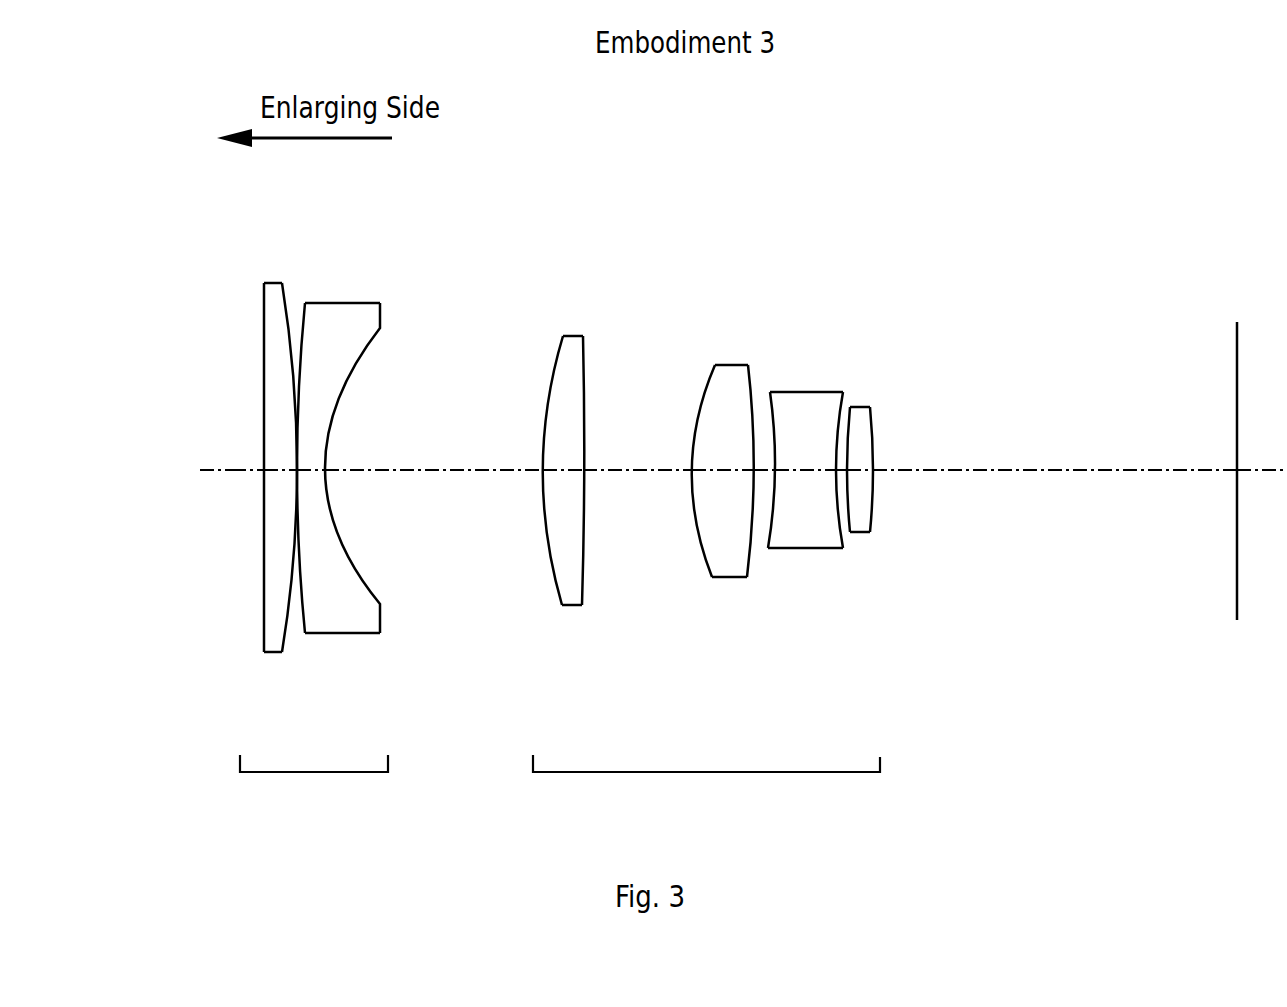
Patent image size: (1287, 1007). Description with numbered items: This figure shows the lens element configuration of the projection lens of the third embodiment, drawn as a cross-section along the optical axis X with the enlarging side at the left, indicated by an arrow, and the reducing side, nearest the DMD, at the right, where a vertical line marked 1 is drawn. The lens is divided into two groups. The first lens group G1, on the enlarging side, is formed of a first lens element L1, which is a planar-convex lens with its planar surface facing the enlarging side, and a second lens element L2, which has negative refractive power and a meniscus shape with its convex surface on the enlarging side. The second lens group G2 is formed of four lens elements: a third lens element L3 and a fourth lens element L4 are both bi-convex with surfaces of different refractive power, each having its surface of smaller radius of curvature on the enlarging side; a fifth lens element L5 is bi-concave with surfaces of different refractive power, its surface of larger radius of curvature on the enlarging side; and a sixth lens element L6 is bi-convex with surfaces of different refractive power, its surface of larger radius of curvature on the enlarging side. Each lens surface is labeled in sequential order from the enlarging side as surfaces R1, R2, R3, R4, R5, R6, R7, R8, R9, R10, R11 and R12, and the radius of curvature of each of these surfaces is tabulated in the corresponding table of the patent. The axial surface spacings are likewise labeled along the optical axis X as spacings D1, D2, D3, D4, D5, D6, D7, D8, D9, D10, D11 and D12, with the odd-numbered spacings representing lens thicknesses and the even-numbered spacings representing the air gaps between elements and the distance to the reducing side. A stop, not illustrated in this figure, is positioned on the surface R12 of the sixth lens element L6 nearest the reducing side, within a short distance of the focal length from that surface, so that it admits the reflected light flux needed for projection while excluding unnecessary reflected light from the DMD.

The screen / image plane 1 is at (1237, 377).
The optical axis X is at (199, 470).
The first lens group G1 is at (314, 788).
The second lens group G2 is at (706, 785).
The first lens element L1 is at (231, 431).
The second lens element L2 is at (353, 430).
The third lens element L3 is at (549, 430).
The fourth lens element L4 is at (696, 420).
The fifth lens element L5 is at (812, 414).
The sixth lens element L6 is at (904, 416).
The lens surface R1 is at (264, 334).
The lens surface R2 is at (285, 312).
The lens surface R3 is at (304, 320).
The lens surface R4 is at (345, 383).
The lens surface R5 is at (553, 364).
The lens surface R6 is at (602, 460).
The lens surface R7 is at (702, 400).
The lens surface R8 is at (750, 383).
The lens surface R9 is at (772, 420).
The lens surface R10 is at (839, 420).
The lens surface R11 is at (851, 432).
The lens surface R12 is at (873, 455).
The surface spacing D1 is at (277, 474).
The surface spacing D2 is at (294, 520).
The surface spacing D3 is at (311, 476).
The surface spacing D4 is at (453, 472).
The surface spacing D5 is at (565, 474).
The surface spacing D6 is at (599, 473).
The surface spacing D7 is at (723, 493).
The surface spacing D8 is at (755, 475).
The surface spacing D9 is at (805, 493).
The surface spacing D10 is at (856, 476).
The surface spacing D11 is at (871, 495).
The surface spacing D12 is at (985, 475).